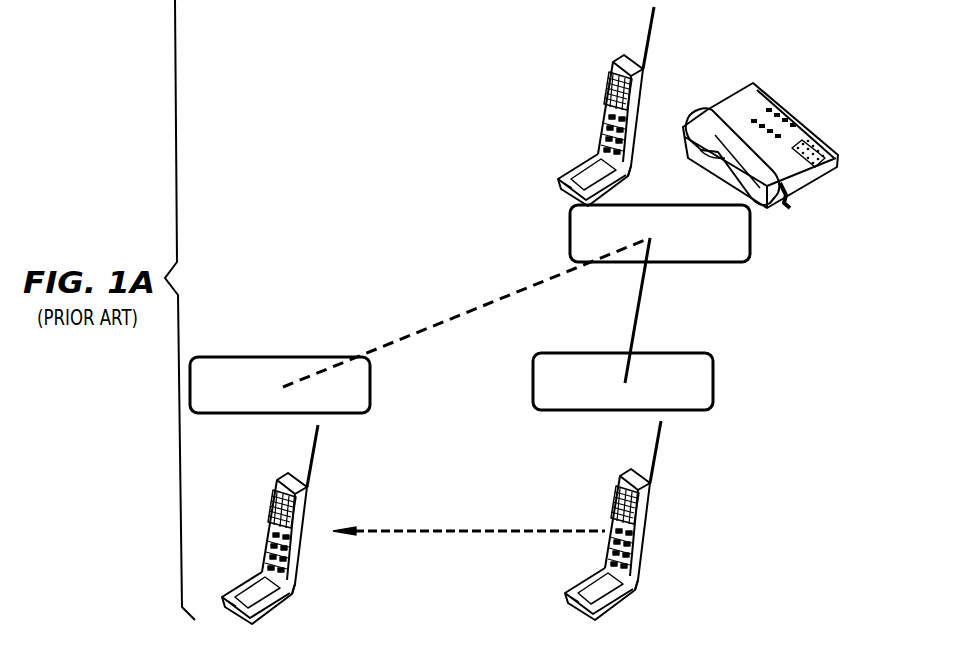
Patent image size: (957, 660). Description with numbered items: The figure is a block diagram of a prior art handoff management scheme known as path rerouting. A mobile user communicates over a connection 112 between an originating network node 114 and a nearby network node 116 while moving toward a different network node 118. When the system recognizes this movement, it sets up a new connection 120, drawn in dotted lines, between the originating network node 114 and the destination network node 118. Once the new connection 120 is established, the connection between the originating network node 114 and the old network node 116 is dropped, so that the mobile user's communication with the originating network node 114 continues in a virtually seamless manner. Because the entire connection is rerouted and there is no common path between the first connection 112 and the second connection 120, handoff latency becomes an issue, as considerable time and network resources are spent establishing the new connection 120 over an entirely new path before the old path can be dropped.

The connection 112 is at (640, 328).
The originating network node 114 is at (740, 230).
The nearby network node 116 is at (700, 383).
The different network node 118 is at (260, 365).
The new connection 120 is at (480, 305).